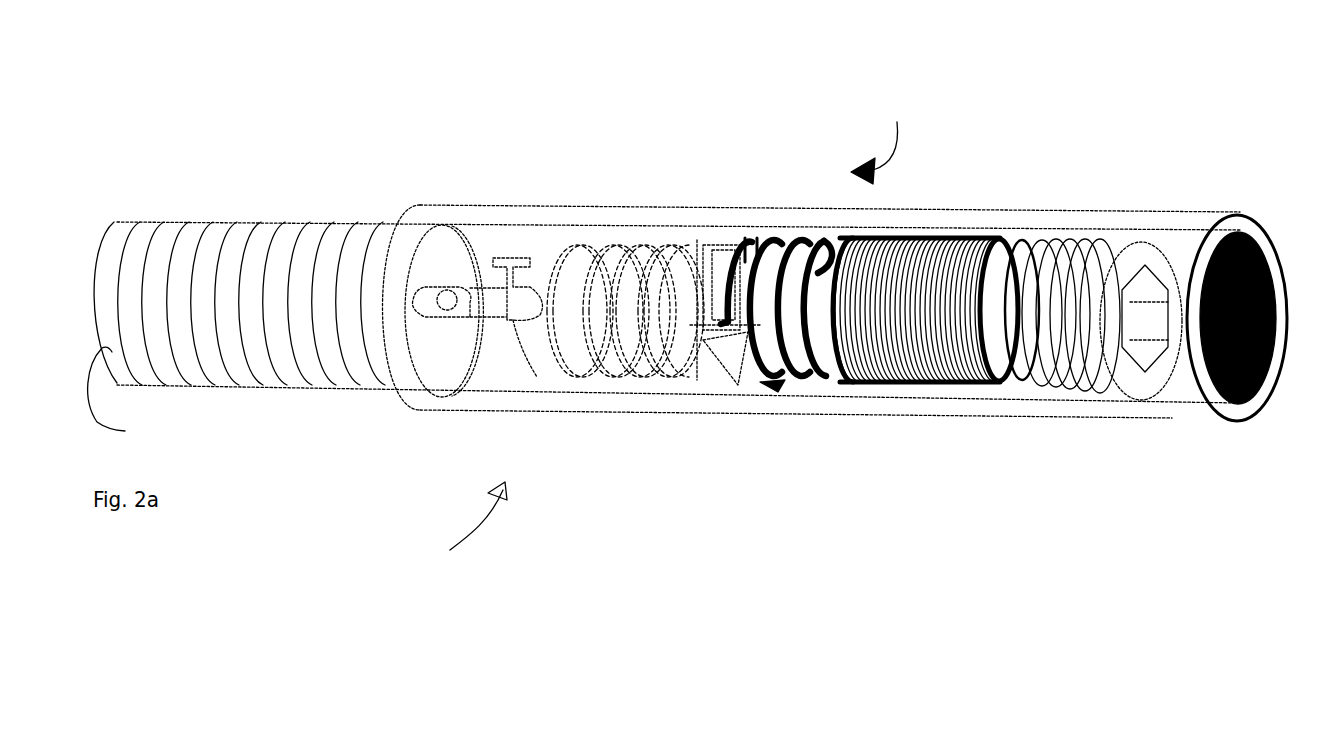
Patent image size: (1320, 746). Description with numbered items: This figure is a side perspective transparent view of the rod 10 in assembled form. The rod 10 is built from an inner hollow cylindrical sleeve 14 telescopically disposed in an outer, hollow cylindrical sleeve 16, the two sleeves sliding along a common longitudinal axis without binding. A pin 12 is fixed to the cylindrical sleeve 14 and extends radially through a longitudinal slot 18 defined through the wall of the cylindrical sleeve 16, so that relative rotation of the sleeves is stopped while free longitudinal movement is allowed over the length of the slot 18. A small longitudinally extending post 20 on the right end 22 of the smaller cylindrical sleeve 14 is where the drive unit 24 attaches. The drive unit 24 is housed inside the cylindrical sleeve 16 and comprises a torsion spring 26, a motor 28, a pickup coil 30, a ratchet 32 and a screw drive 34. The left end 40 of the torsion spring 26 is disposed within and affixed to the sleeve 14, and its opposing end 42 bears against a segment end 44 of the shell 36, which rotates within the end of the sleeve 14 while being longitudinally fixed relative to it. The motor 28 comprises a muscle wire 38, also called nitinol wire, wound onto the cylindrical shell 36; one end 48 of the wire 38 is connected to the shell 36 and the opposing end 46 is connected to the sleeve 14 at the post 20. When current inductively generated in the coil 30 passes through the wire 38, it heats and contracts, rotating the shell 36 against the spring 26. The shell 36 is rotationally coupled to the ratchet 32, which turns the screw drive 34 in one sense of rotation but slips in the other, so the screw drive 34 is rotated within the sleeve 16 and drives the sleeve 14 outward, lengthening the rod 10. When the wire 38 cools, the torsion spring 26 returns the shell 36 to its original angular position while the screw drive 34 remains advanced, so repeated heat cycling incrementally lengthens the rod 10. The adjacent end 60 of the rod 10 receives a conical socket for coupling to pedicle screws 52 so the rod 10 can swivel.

The rod 10 is at (462, 532).
The pin 12 is at (448, 290).
The inner hollow cylindrical sleeve 14 is at (300, 238).
The outer hollow cylindrical sleeve 16 is at (935, 212).
The longitudinal slot 18 is at (480, 312).
The post 20 is at (730, 385).
The right end 22 is at (756, 240).
The drive unit 24 is at (880, 138).
The torsion spring 26 is at (637, 378).
The motor 28 is at (767, 387).
The pickup coil 30 is at (905, 372).
The ratchet 32 is at (1042, 382).
The screw drive 34 is at (1108, 395).
The shell 36 is at (832, 240).
The muscle wire 38 is at (833, 380).
The left end 40 is at (508, 260).
The opposing end 42 is at (712, 270).
The segment end 44 is at (700, 378).
The opposing end 46 is at (740, 240).
The end 48 is at (850, 240).
The pedicle screws 52 is at (747, 240).
The adjacent end 60 is at (132, 395).